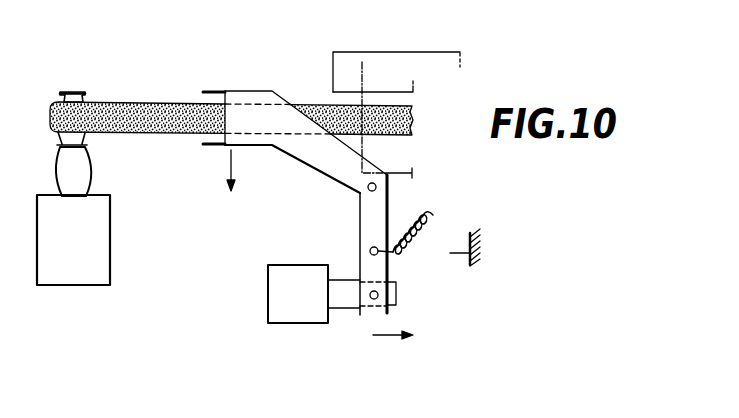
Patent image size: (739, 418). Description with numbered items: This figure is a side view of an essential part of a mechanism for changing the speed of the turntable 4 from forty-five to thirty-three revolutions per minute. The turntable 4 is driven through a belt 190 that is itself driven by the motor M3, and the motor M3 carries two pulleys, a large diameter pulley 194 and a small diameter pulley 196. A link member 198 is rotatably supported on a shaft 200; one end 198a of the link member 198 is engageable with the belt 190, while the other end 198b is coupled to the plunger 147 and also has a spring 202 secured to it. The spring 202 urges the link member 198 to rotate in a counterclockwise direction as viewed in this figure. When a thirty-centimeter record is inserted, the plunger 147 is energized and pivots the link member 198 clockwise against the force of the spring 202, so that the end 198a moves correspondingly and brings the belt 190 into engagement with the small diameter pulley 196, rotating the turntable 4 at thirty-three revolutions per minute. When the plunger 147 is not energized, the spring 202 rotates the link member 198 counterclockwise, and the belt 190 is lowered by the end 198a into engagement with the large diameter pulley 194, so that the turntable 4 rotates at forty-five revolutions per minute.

The turntable 4 is at (428, 62).
The plunger 147 is at (278, 298).
The belt 190 is at (182, 133).
The large diameter pulley 194 is at (88, 175).
The small diameter pulley 196 is at (86, 118).
The link member 198 is at (313, 160).
The one end of link member 198a is at (231, 97).
The other end of link member 198b is at (365, 310).
The shaft 200 is at (376, 189).
The spring 202 is at (425, 258).
The motor M3 is at (98, 246).